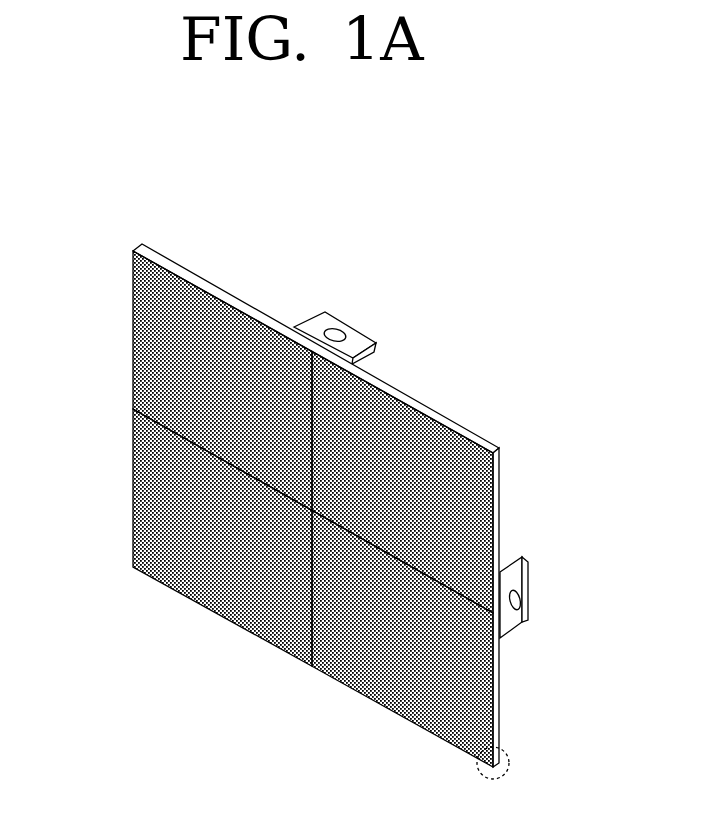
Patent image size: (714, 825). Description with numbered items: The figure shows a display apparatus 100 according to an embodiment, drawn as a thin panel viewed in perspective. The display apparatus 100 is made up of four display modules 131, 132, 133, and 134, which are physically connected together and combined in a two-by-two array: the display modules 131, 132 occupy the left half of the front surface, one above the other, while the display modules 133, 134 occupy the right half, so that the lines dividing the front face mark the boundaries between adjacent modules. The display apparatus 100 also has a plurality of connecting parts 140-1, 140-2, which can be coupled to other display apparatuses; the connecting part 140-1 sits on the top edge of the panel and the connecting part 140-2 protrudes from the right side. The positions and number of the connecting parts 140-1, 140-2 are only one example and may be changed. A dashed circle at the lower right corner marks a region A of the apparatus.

The display apparatus 100 is at (365, 154).
The display module 131 is at (155, 357).
The display module 132 is at (157, 490).
The display module 133 is at (478, 517).
The display module 134 is at (475, 685).
The connecting part 140-1 is at (357, 325).
The connecting part 140-2 is at (532, 585).
The detail region A is at (519, 755).